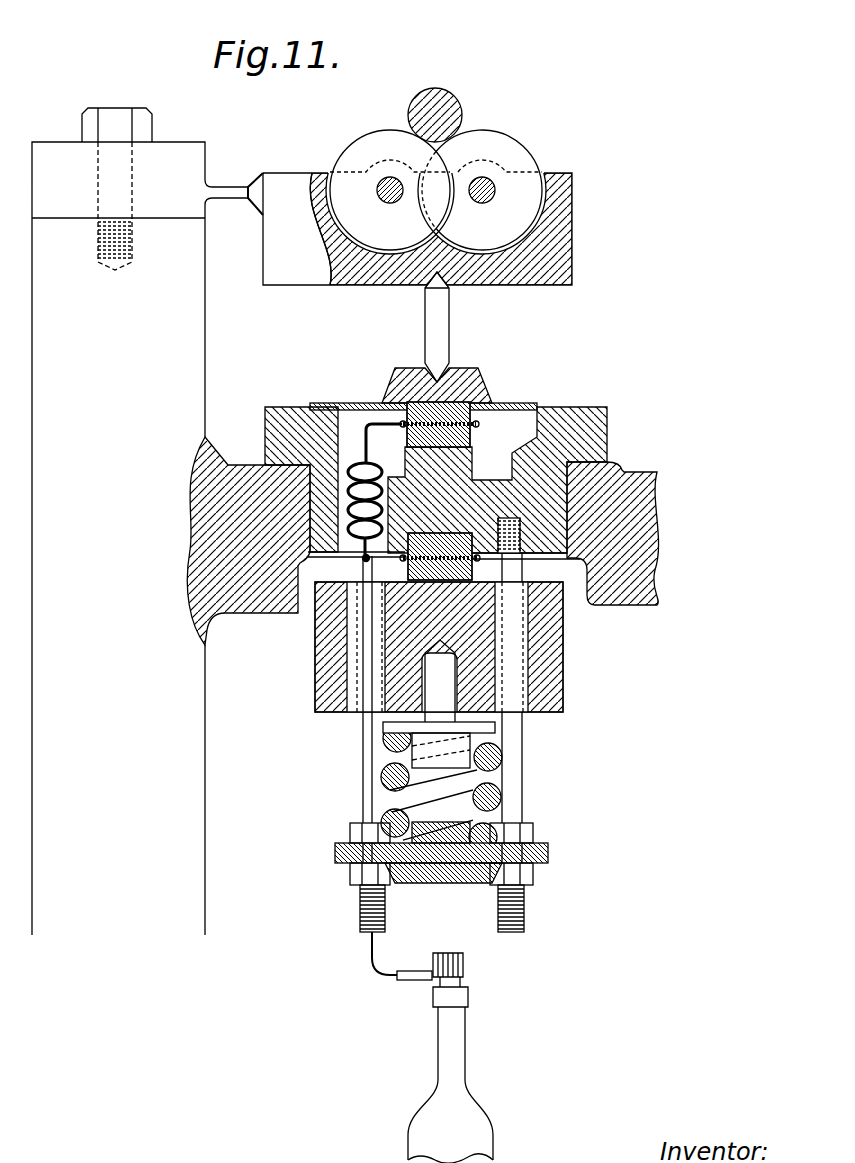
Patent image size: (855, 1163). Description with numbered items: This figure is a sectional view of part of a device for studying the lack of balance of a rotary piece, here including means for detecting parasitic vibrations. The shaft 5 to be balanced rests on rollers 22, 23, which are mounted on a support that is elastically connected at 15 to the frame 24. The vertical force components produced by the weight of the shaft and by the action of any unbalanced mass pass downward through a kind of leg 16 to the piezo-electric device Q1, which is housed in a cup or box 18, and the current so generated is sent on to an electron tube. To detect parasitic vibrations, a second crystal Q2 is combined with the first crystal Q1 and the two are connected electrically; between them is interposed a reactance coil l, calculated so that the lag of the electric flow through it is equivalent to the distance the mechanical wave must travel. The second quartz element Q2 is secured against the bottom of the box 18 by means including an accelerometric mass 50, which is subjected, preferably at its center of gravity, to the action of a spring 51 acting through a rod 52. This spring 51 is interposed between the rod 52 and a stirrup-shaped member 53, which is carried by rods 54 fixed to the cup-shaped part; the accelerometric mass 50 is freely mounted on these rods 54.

The shaft 5 is at (447, 90).
The roller 22 is at (349, 150).
The roller 23 is at (517, 147).
The elastic connection 15 is at (231, 191).
The leg 16 is at (440, 323).
The frame 24 is at (187, 373).
The reactance coil l is at (357, 462).
The piezo-electric device Q1 is at (483, 380).
The box 18 is at (568, 427).
The second crystal Q2 is at (477, 567).
The accelerometric mass 50 is at (477, 670).
The rod 52 is at (437, 688).
The spring 51 is at (496, 757).
The rods 54 is at (512, 790).
The stirrup-shaped member 53 is at (517, 882).